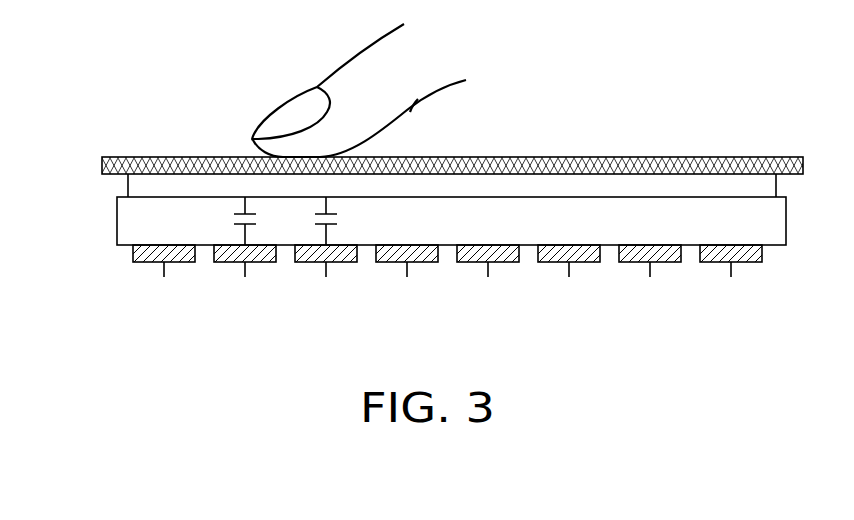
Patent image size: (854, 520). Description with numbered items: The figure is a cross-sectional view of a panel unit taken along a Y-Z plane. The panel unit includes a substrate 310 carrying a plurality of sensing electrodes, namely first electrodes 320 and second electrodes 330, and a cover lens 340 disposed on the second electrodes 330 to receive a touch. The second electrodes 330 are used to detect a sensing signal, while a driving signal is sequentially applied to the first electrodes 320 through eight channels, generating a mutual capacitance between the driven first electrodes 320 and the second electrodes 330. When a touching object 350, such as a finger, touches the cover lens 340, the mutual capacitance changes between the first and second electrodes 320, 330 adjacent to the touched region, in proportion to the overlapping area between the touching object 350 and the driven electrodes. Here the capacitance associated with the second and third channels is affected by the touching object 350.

The substrate 310 is at (126, 218).
The first electrodes 320 is at (132, 257).
The second electrodes 330 is at (137, 183).
The cover lens 340 is at (583, 157).
The touching object 350 is at (368, 73).